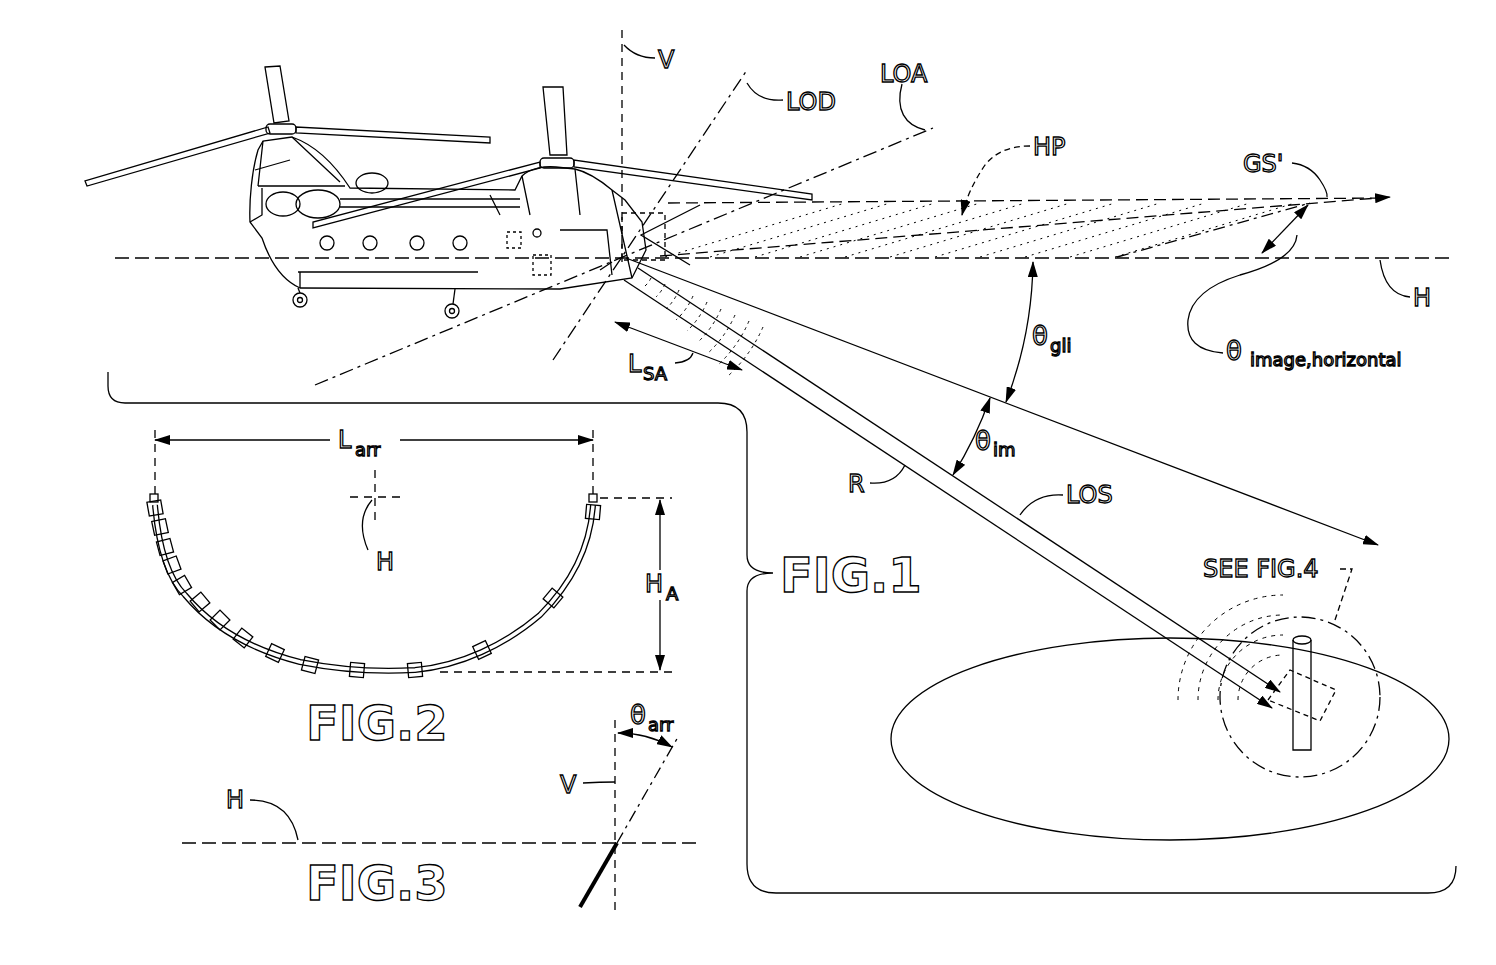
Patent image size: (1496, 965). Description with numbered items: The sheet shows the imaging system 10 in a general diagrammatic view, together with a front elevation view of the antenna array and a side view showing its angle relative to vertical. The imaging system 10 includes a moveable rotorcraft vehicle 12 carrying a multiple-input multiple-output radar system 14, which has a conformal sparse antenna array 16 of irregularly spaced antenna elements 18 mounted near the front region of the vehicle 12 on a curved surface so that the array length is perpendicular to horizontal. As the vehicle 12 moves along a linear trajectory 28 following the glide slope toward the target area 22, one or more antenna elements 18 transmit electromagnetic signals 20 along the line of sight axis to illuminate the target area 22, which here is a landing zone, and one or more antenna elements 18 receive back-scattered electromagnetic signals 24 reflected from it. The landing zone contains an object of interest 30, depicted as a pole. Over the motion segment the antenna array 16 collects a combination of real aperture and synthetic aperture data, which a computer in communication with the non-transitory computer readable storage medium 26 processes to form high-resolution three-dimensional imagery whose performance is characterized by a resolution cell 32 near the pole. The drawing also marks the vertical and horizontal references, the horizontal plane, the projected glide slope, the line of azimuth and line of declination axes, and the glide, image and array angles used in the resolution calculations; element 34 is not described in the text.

In FIG. 1, the imaging system 10 is at (1188, 122).
In FIG. 1, the moveable vehicle 12 is at (357, 293).
In FIG. 1, the multiple-input multiple-output (MIMO) radar system 14 is at (592, 290).
In FIG. 1, the antenna array 16 is at (597, 258).
In FIG. 2, the antenna array 16 is at (237, 657).
In FIG. 3, the antenna array 16 is at (587, 880).
In FIG. 2, the antenna elements 18 is at (168, 520).
In FIG. 1, the electromagnetic signals 20 is at (790, 310).
In FIG. 1, the target area 22 is at (1118, 719).
In FIG. 1, the back-scattered electromagnetic signals 24 is at (1172, 600).
In FIG. 1, the non-transitory computer readable storage medium 26 is at (520, 272).
In FIG. 1, the trajectory 28 is at (1065, 420).
In FIG. 1, the object of interest 30 is at (1315, 645).
In FIG. 1, the resolution cell 32 is at (1329, 699).
In FIG. 1, the cockpit display 34 is at (500, 210).